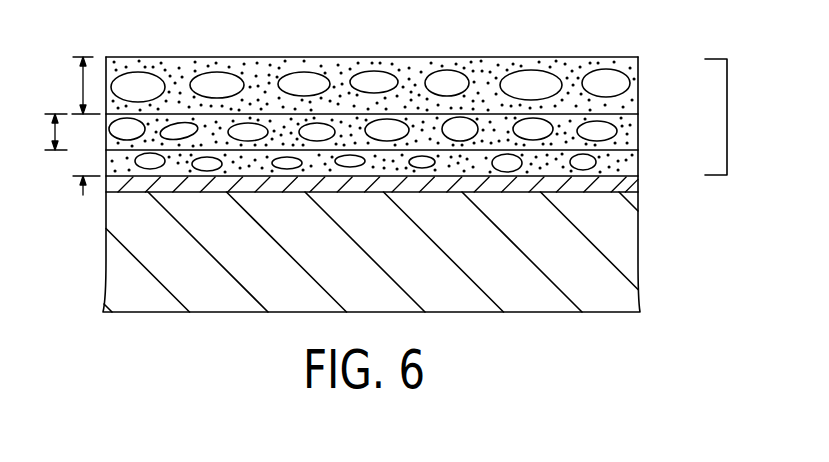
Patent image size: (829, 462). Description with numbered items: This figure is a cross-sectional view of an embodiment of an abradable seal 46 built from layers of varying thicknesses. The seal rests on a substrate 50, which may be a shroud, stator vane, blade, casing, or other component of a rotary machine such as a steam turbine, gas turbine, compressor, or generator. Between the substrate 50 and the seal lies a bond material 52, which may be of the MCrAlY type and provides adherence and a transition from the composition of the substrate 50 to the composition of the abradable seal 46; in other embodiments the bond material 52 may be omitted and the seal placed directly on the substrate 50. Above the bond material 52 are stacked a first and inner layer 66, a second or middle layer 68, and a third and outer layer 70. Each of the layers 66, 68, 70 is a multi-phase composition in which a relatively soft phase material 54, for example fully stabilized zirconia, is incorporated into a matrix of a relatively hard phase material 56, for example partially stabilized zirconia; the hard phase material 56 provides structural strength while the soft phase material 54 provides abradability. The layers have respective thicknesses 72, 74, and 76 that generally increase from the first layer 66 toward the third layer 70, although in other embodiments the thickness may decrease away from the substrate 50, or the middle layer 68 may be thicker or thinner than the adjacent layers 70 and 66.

The abradable seal 46 is at (730, 117).
The substrate 50 is at (640, 256).
The bond material 52 is at (633, 183).
The soft phase material 54 is at (523, 78).
The hard phase material 56 is at (260, 77).
The first layer 66 is at (640, 165).
The second layer 68 is at (640, 127).
The third layer 70 is at (401, 66).
The thickness of first layer 72 is at (83, 193).
The thickness of second layer 74 is at (55, 146).
The thickness of third layer 76 is at (80, 88).